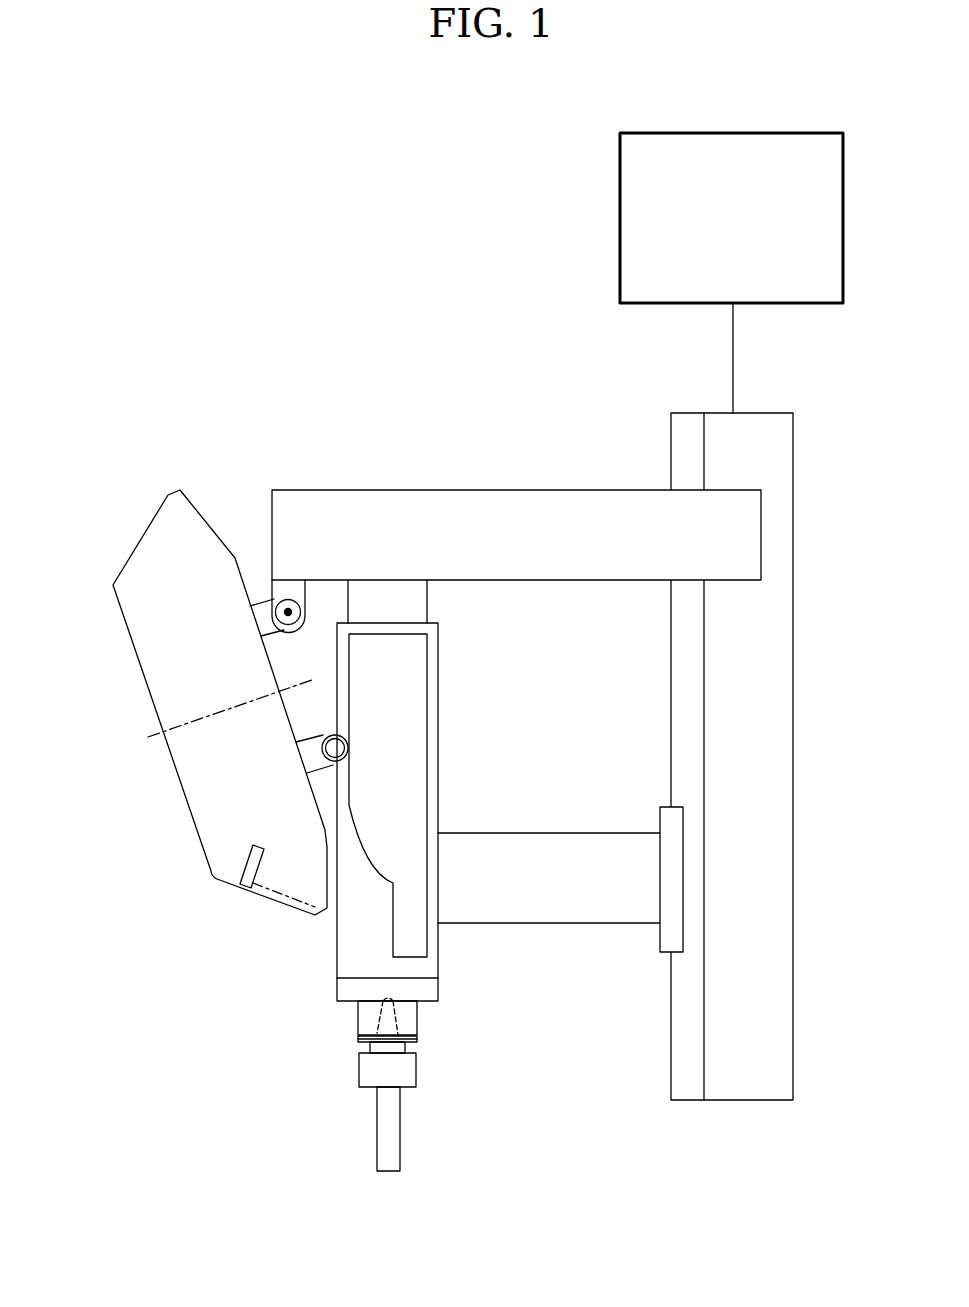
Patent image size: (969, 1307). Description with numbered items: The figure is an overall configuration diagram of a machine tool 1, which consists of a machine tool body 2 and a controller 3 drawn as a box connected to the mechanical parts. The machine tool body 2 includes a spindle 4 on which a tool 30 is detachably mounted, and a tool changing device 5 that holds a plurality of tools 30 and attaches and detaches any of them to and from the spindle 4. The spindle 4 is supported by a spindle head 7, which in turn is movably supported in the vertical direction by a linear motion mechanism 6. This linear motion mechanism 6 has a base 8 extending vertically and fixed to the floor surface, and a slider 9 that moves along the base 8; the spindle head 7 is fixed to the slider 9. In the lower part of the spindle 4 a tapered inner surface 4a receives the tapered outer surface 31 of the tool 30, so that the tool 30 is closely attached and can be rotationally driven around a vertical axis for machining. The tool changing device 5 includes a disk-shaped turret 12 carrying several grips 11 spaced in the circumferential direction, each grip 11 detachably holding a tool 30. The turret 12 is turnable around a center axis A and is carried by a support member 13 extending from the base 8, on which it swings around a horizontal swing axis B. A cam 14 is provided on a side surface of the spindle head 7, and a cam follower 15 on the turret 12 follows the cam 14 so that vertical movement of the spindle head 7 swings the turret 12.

The machine tool 1 is at (227, 177).
The machine tool body 2 is at (378, 373).
The controller 3 is at (600, 218).
The spindle 4 is at (388, 1040).
The tapered inner surface 4a is at (407, 1030).
The tool changing device 5 is at (189, 702).
The linear motion mechanism 6 is at (671, 1040).
The spindle head 7 is at (428, 607).
The base 8 is at (793, 737).
The slider 9 is at (660, 808).
The grip 11 is at (245, 863).
The turret 12 is at (141, 678).
The support member 13 is at (468, 490).
The cam 14 is at (375, 872).
The cam follower 15 is at (340, 737).
The tool 30 is at (373, 1135).
The tapered outer surface 31 is at (380, 1012).
The center axis A is at (197, 718).
The swing axis B is at (277, 610).